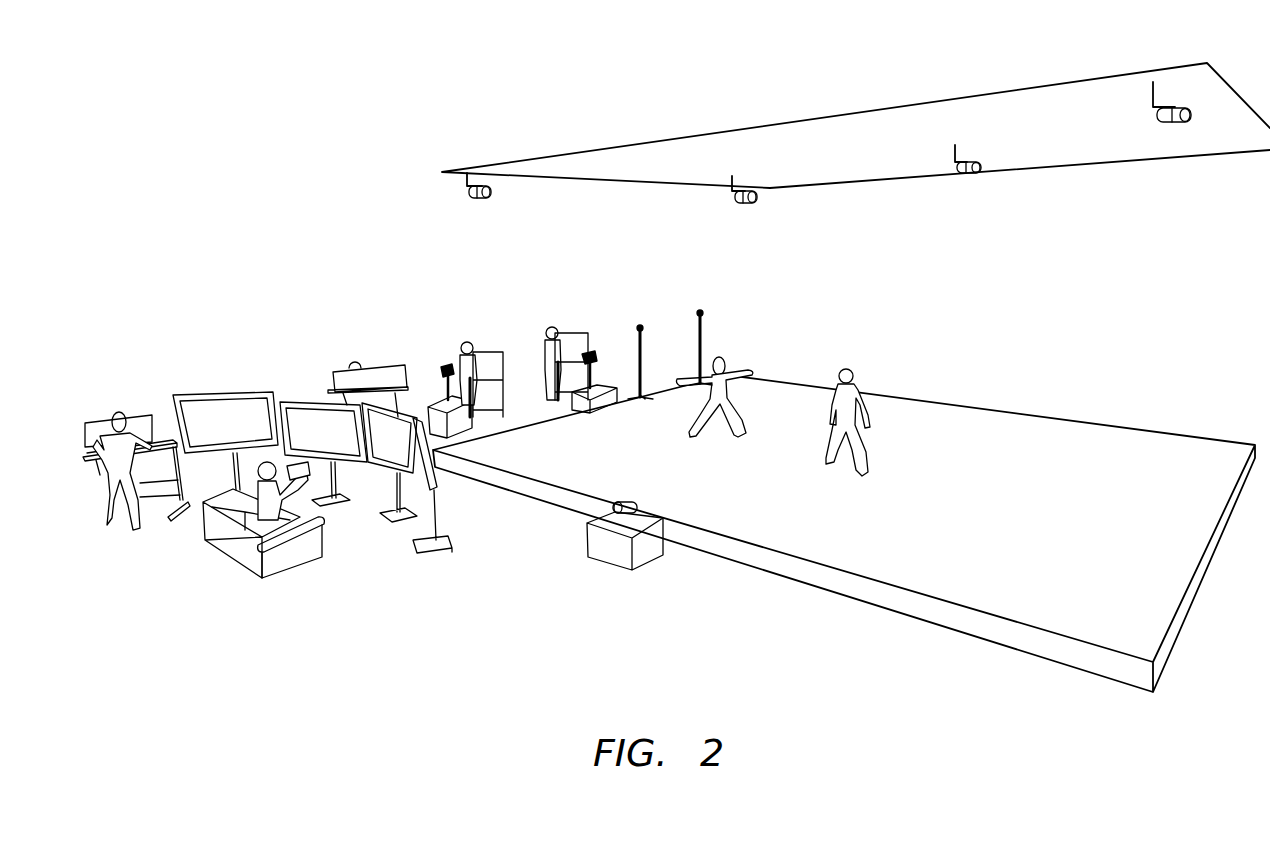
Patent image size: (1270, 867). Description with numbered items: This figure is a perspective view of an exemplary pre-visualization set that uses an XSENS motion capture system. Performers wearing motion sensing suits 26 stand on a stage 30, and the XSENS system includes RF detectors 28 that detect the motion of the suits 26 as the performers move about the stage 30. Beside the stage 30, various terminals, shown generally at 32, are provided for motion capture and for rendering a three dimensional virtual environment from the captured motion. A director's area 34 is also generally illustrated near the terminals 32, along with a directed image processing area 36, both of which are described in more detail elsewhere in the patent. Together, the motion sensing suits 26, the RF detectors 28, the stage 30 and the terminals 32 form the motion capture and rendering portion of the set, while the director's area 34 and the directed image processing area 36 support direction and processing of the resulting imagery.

The motion sensing suits 26 is at (842, 370).
The RF detectors 28 is at (480, 200).
The stage 30 is at (1118, 443).
The terminals 32 is at (407, 315).
The director's area 34 is at (347, 545).
The directed image processing area 36 is at (120, 403).